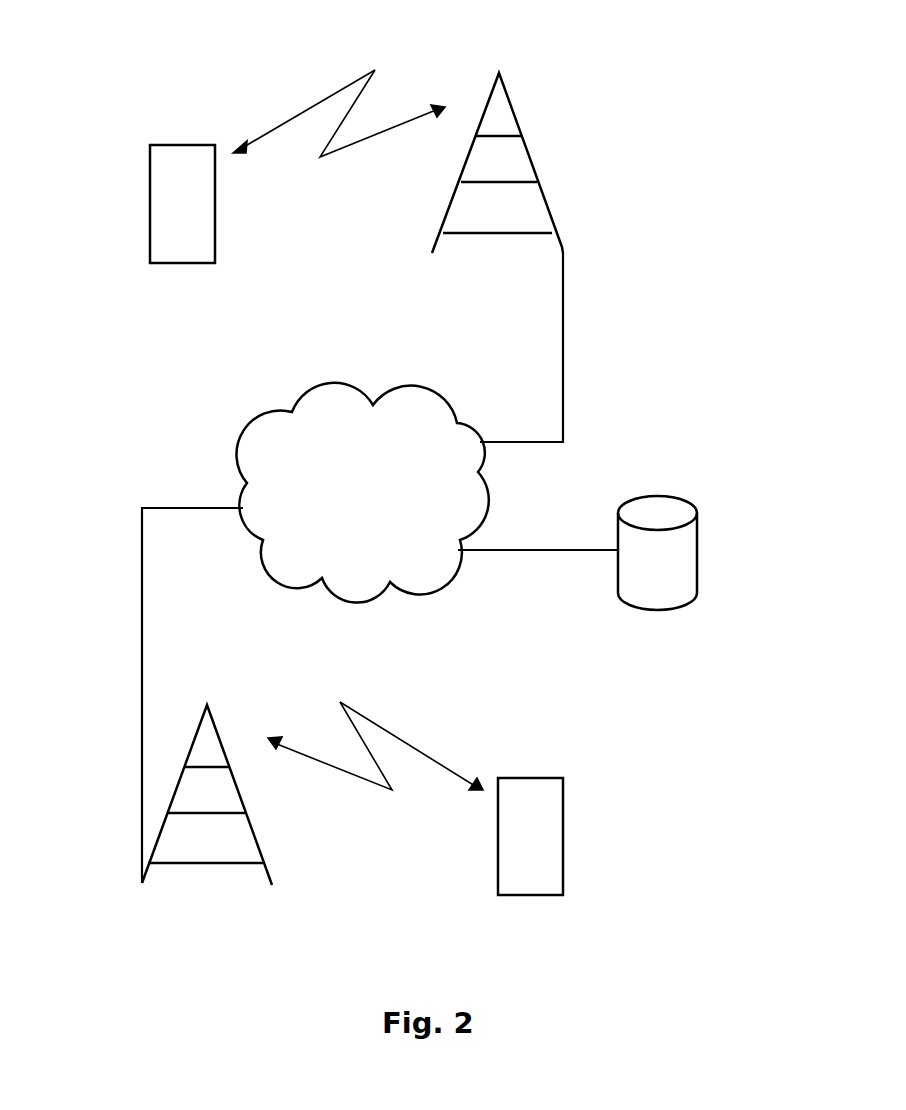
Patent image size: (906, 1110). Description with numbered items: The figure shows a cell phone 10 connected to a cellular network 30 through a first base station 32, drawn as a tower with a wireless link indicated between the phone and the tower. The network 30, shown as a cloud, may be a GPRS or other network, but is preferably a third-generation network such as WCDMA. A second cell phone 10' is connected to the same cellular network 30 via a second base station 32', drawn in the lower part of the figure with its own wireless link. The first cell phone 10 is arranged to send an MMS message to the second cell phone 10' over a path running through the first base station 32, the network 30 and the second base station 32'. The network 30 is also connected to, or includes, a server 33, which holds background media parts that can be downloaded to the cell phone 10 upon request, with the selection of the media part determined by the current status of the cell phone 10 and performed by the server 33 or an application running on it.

The cell phone 10 is at (140, 204).
The second cell phone 10' is at (576, 836).
The cellular network 30 is at (318, 407).
The first base station 32 is at (497, 131).
The second base station 32' is at (207, 763).
The server 33 is at (682, 543).